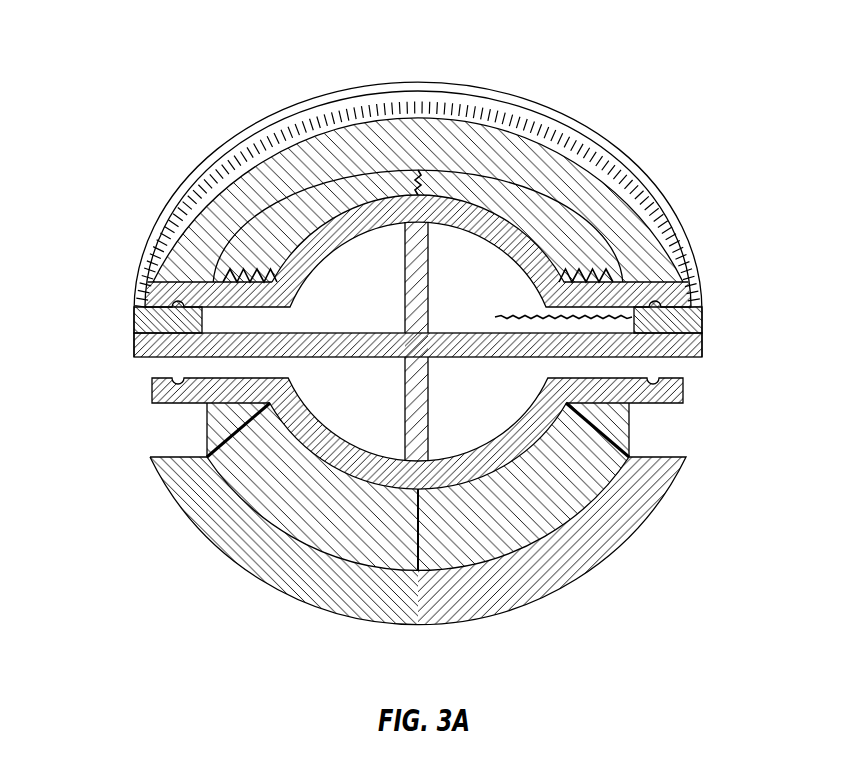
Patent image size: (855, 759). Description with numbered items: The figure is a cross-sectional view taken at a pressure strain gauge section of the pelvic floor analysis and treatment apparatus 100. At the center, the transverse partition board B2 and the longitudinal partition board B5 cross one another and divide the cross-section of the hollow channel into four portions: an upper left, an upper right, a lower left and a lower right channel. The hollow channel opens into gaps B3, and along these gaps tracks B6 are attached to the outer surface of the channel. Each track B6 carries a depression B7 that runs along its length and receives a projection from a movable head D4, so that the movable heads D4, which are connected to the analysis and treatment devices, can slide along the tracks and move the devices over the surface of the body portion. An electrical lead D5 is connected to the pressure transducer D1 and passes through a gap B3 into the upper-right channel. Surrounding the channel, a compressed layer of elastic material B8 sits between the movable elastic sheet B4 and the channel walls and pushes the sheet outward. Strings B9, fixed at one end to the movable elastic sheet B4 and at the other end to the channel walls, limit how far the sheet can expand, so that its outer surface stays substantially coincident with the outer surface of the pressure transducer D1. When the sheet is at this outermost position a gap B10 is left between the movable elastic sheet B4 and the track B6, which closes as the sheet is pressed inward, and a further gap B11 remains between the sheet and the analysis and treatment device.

The pelvic floor analysis and treatment apparatus 100 is at (162, 65).
The pressure transducer D1 is at (415, 81).
The gap B11 is at (487, 106).
The movable elastic sheet B4 is at (287, 175).
The elastic material B8 is at (524, 206).
The track B6 is at (207, 289).
The movable head D4 is at (148, 316).
The transverse partition board B2 is at (656, 337).
The gap B3 is at (248, 318).
The longitudinal partition board B5 is at (403, 410).
The electrical lead D5 is at (571, 318).
The depression B7 is at (667, 388).
The gap B10 is at (187, 431).
The string B9 is at (416, 170).